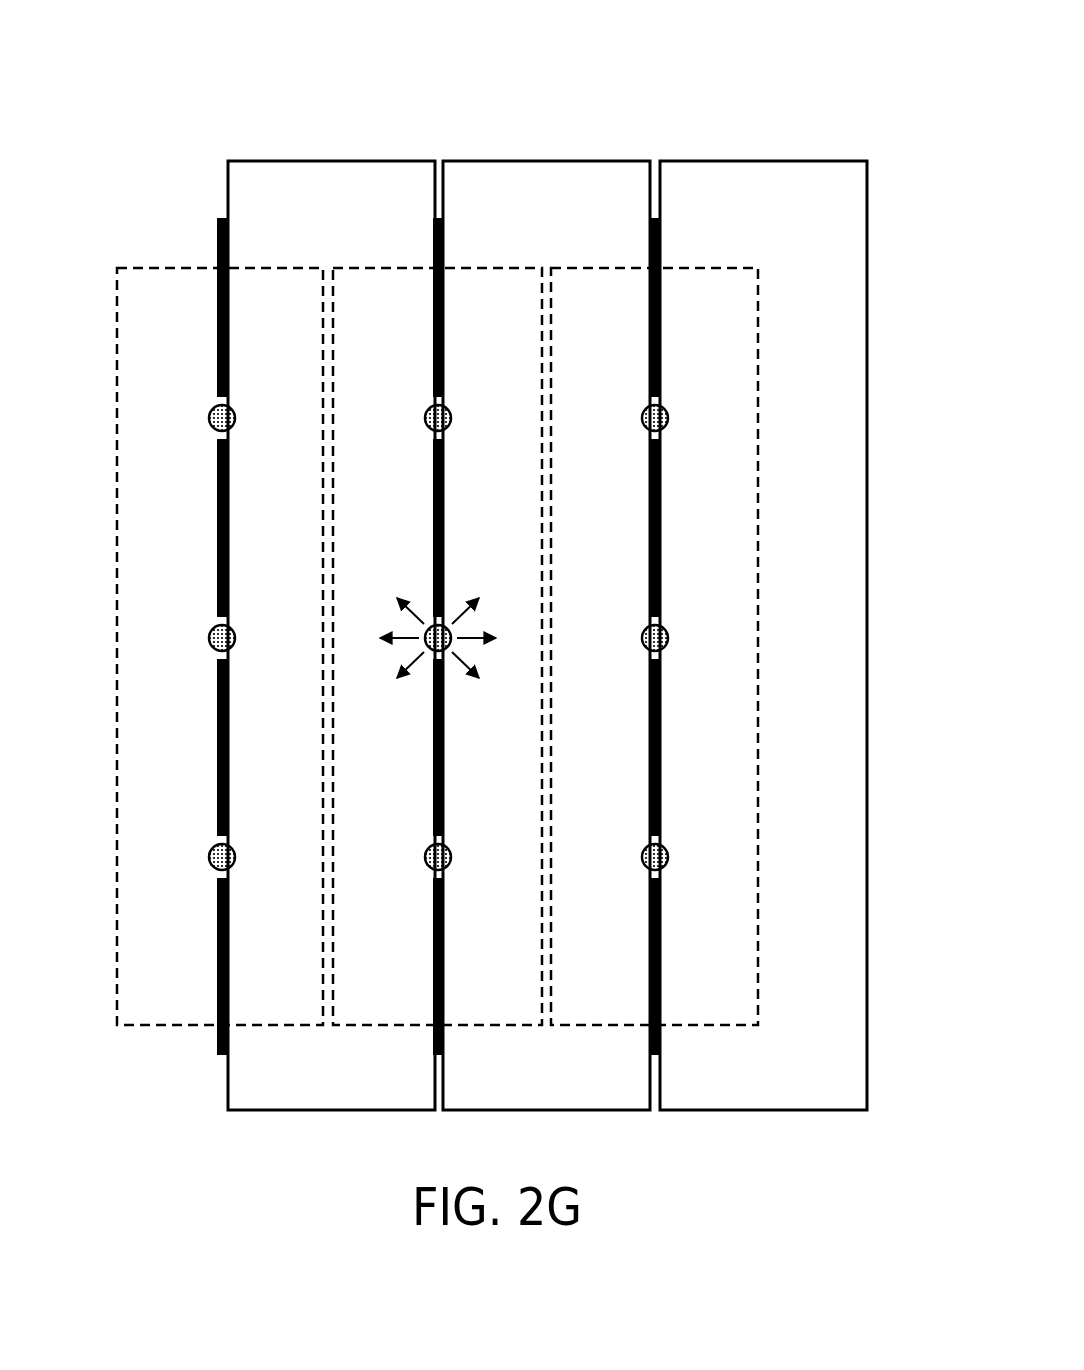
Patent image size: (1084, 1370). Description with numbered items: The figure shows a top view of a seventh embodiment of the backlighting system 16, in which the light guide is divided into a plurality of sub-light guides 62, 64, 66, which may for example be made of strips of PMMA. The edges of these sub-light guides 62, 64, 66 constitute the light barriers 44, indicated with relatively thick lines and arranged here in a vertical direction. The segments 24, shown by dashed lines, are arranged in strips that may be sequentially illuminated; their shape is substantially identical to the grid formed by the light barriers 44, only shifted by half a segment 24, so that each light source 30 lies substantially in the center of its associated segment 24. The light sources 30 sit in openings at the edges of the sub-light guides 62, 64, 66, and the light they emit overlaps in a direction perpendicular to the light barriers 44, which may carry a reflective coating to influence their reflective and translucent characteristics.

The backlighting system 16 is at (814, 70).
The sub-light guide 62 is at (334, 170).
The sub-light guide 64 is at (548, 170).
The sub-light guide 66 is at (765, 170).
The segment 24 is at (303, 265).
The light barrier 44 is at (230, 338).
The light source 30 is at (236, 418).